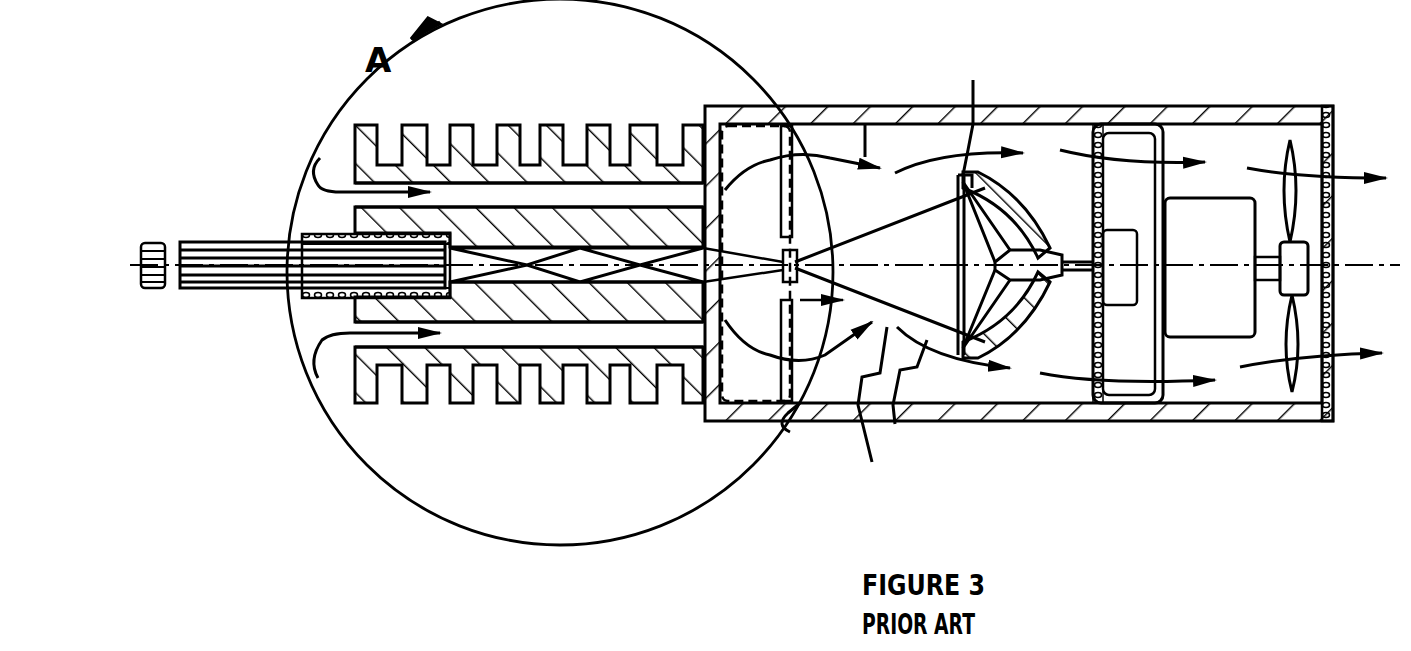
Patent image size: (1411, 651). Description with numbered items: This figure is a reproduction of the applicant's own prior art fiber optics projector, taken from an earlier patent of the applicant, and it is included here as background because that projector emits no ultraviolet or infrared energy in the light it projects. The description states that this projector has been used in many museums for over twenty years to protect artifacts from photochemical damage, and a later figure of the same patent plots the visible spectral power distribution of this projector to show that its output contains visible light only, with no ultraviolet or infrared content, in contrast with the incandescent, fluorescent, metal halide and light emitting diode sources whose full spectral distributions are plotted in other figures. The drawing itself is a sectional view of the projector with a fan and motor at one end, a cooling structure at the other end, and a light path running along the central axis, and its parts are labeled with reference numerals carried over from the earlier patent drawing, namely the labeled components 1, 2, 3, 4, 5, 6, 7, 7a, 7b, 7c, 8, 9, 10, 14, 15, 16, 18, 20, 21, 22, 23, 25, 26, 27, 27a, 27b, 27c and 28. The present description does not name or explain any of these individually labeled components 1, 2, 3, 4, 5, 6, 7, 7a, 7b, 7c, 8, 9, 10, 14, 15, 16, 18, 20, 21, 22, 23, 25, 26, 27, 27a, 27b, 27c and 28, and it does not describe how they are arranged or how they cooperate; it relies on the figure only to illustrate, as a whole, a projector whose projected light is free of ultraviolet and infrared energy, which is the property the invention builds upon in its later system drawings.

The housing 1 is at (1035, 97).
The light source 2 is at (1040, 240).
The lens 3 is at (898, 262).
The lower lens support arm 4 is at (1030, 315).
The inner compartment wall 5 is at (860, 124).
The emitter mount 6 is at (880, 106).
The lens support arm 7 is at (1005, 205).
The partition 7a is at (929, 275).
The partition 7b is at (906, 404).
The partition 7c is at (812, 435).
The lower chamber 8 is at (769, 350).
The upper chamber 9 is at (771, 181).
The heat sink body 10 is at (472, 262).
The housing top wall 14 is at (815, 106).
The light guide shaft 15 is at (222, 242).
The bore 16 is at (330, 300).
The sleeve 18 is at (305, 234).
The end plug 20 is at (158, 243).
The cooling fins 21 is at (457, 172).
The air channel 22 is at (587, 197).
The lower cooling fins 23 is at (650, 120).
The fan 25 is at (1285, 140).
The motor 26 is at (1210, 124).
The air flow inlet 27 is at (355, 87).
The air flow through compartment 27a is at (860, 153).
The air flow through housing 27b is at (955, 403).
The air flow outlet 27c is at (1365, 135).
The outlet grille 28 is at (1333, 300).